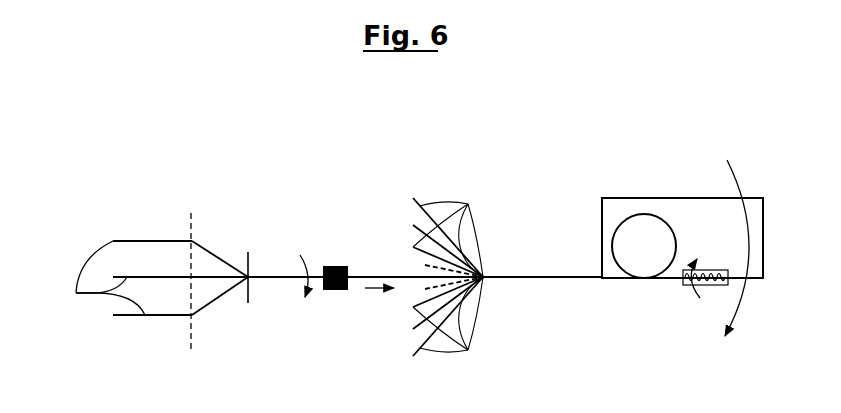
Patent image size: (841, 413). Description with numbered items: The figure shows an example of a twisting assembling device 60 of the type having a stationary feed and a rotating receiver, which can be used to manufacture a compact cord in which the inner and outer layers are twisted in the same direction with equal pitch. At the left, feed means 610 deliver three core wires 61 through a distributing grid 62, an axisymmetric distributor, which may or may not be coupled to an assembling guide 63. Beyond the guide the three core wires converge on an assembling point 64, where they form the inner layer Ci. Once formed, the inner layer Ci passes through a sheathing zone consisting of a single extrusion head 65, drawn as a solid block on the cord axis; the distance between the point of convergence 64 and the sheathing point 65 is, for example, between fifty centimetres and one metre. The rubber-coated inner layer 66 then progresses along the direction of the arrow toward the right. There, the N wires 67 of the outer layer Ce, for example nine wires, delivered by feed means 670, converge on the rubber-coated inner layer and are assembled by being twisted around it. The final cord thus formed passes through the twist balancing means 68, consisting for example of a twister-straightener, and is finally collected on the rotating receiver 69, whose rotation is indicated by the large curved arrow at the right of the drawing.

The twisting assembling device 60 is at (534, 142).
The feed means 610 is at (87, 245).
The core wires 61 is at (105, 281).
The distributing grid 62 is at (192, 220).
The assembling guide 63 is at (248, 290).
The assembling point 64 is at (258, 272).
The extrusion head 65 is at (342, 290).
The rubber-coated inner layer 66 is at (373, 275).
The feed means 670 is at (436, 194).
The wires of the outer layer 67 is at (450, 280).
The twist balancing means 68 is at (710, 270).
The rotating receiver 69 is at (665, 291).
The inner layer Ci is at (290, 280).
The outer layer Ce is at (503, 282).